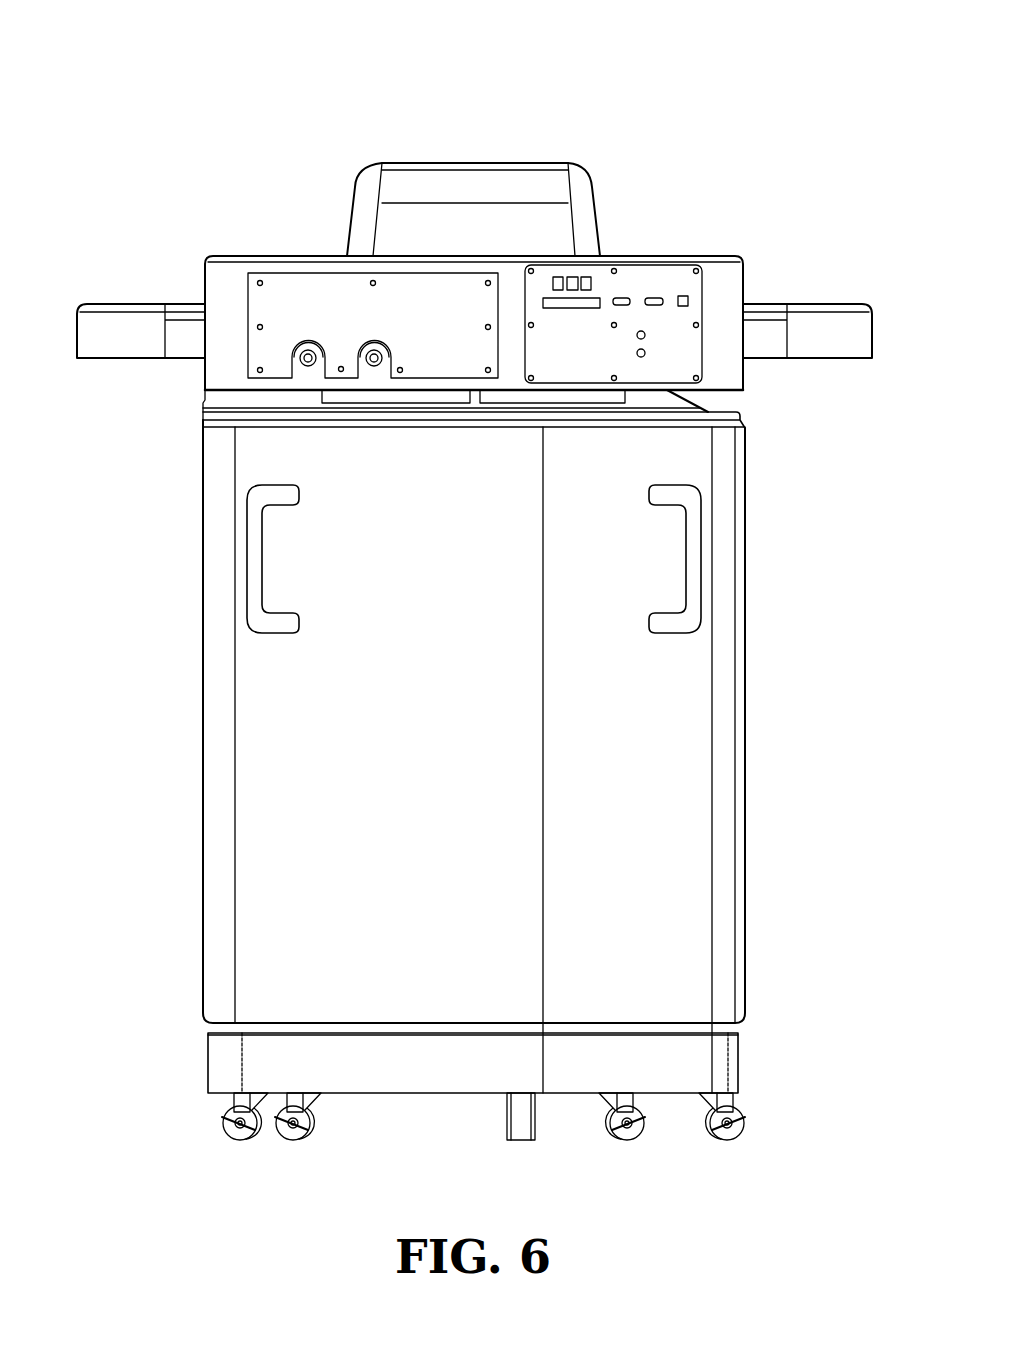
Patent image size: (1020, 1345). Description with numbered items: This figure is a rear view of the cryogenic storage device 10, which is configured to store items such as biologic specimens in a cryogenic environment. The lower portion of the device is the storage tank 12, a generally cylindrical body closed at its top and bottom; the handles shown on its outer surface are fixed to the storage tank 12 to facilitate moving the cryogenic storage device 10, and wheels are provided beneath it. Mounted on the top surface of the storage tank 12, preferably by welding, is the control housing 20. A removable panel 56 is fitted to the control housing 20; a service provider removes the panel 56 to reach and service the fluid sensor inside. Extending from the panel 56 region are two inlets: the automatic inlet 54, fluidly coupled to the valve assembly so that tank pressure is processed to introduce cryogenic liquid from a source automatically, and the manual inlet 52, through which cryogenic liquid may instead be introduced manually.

The cryogenic storage device 10 is at (432, 105).
The control housing 20 is at (709, 186).
The storage tank 12 is at (785, 661).
The panel 56 is at (406, 326).
The manual inlet 52 is at (377, 366).
The automatic inlet 54 is at (305, 366).